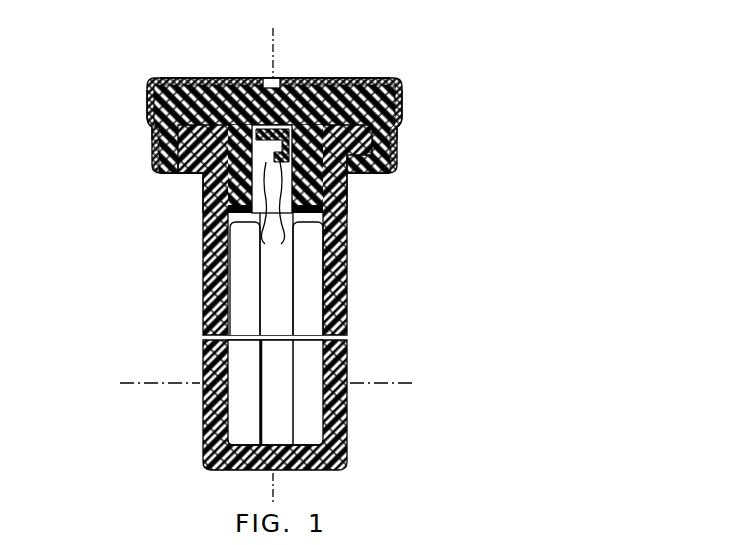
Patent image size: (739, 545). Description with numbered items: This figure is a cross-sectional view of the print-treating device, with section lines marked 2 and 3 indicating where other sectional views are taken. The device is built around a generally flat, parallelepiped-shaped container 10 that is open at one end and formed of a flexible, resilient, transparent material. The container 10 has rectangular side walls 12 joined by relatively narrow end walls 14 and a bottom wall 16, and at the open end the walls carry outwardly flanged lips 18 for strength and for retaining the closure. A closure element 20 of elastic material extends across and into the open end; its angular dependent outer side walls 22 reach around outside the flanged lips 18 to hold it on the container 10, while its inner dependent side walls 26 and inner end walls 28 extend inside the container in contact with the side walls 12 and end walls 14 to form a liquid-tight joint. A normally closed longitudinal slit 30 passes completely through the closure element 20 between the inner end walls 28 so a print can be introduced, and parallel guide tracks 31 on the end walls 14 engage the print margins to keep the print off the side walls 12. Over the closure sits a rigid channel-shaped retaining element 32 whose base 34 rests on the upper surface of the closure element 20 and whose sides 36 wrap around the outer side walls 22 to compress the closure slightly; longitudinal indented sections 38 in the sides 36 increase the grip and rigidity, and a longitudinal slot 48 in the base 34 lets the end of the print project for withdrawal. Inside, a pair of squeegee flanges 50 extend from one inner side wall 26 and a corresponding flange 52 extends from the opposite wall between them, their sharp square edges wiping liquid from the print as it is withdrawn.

The container 10 is at (348, 272).
The side walls 12 is at (205, 356).
The end walls 14 is at (262, 302).
The bottom wall 16 is at (270, 445).
The outwardly flanged lips 18 is at (186, 176).
The closure element 20 is at (190, 80).
The outer side walls 22 is at (160, 173).
The inner dependent side walls 26 is at (205, 214).
The inner end walls 28 is at (258, 246).
The longitudinal slit 30 is at (313, 78).
The guide tracks 31 is at (257, 317).
The retaining element 32 is at (371, 80).
The base 34 is at (247, 79).
The sides 36 is at (150, 100).
The longitudinal indented sections 38 is at (150, 130).
The longitudinal slot 48 is at (280, 80).
The flanges 50 is at (259, 242).
The flange 52 is at (294, 242).
The section line 2- 2 is at (273, 35).
The section line 3- 3 is at (125, 383).